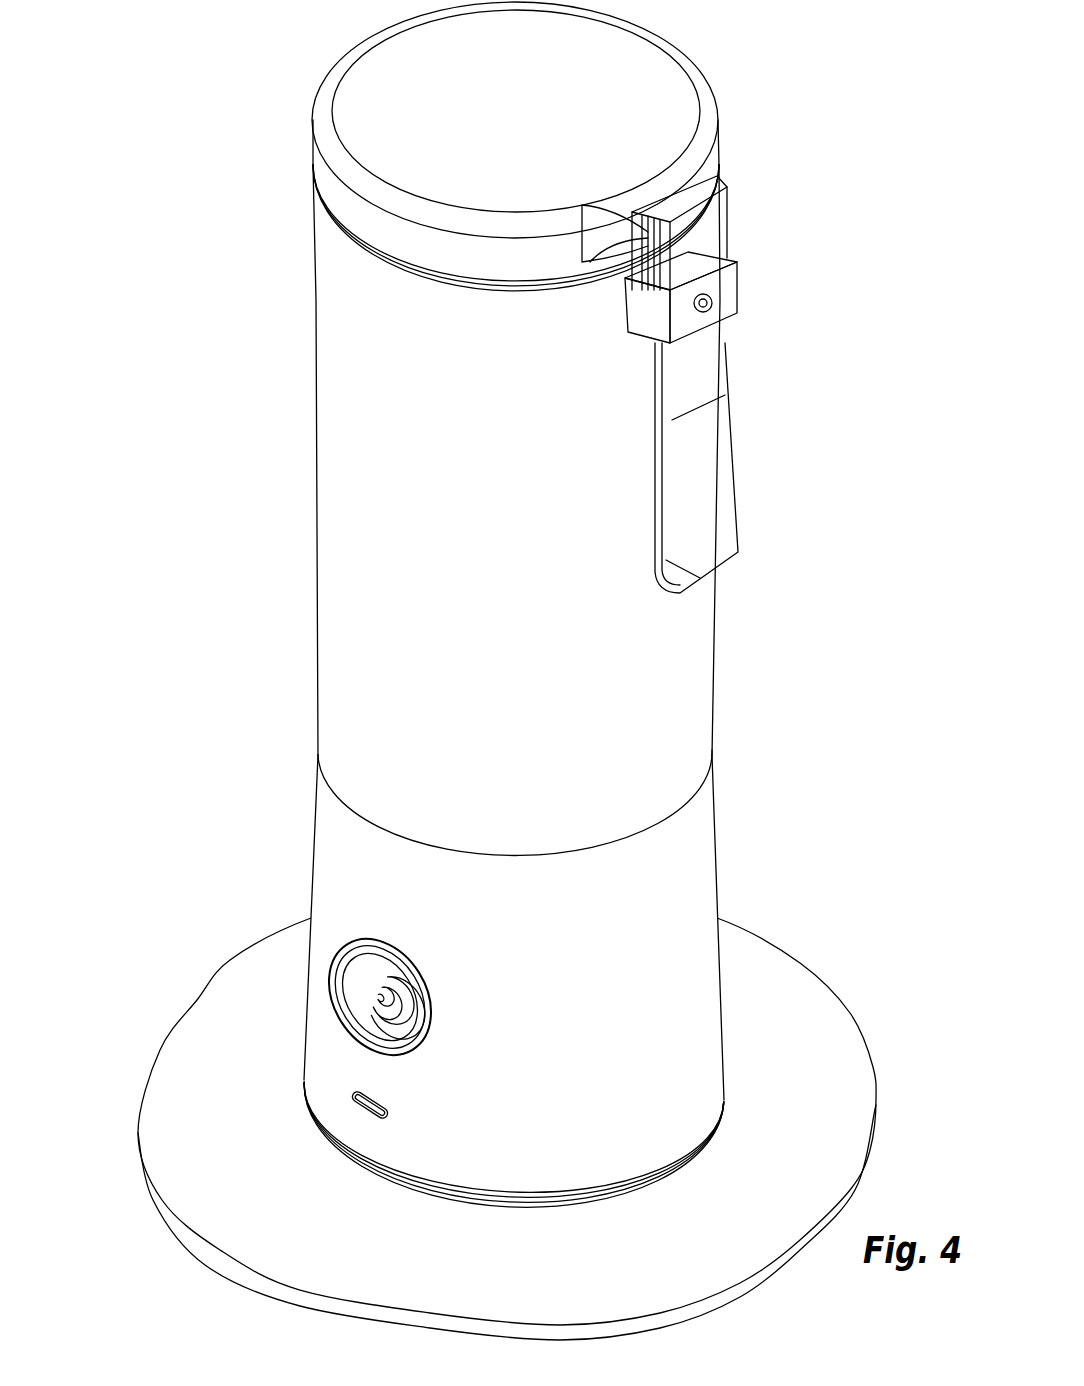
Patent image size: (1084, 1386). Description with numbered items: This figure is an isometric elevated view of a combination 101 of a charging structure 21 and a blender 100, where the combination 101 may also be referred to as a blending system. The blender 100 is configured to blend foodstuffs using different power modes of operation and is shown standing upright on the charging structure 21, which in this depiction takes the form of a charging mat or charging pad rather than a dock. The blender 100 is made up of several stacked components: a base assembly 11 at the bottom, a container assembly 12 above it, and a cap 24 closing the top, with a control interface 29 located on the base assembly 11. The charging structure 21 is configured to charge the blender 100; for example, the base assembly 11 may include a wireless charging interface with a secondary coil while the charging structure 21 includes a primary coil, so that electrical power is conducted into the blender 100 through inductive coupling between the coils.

The blender 100 is at (741, 70).
The combination 101 is at (175, 796).
The cap 24 is at (553, 113).
The container assembly 12 is at (845, 653).
The base assembly 11 is at (828, 846).
The control interface 29 is at (336, 1010).
The charging structure 21 is at (236, 1252).